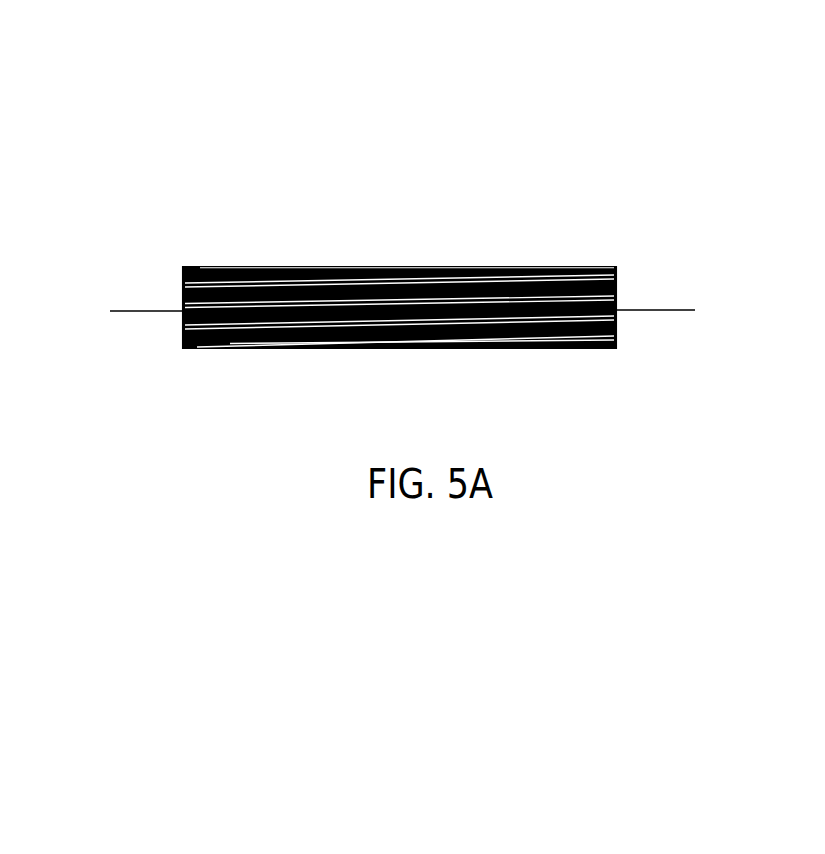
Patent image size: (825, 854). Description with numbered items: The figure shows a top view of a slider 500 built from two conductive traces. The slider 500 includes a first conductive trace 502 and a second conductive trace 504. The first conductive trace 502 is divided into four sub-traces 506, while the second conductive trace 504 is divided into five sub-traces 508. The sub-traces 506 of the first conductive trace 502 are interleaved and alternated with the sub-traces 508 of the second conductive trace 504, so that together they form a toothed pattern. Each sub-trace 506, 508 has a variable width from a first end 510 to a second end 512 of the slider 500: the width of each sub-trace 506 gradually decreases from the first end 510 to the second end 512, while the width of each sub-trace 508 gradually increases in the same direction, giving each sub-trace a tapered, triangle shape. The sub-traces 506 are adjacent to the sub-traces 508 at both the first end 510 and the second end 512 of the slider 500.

The slider 500 is at (657, 73).
The first conductive trace 502 is at (177, 337).
The second conductive trace 504 is at (618, 328).
The sub-traces of the first conductive trace 506 is at (177, 272).
The sub-traces of the second conductive trace 508 is at (620, 272).
The first end 510 is at (215, 252).
The second end 512 is at (580, 252).